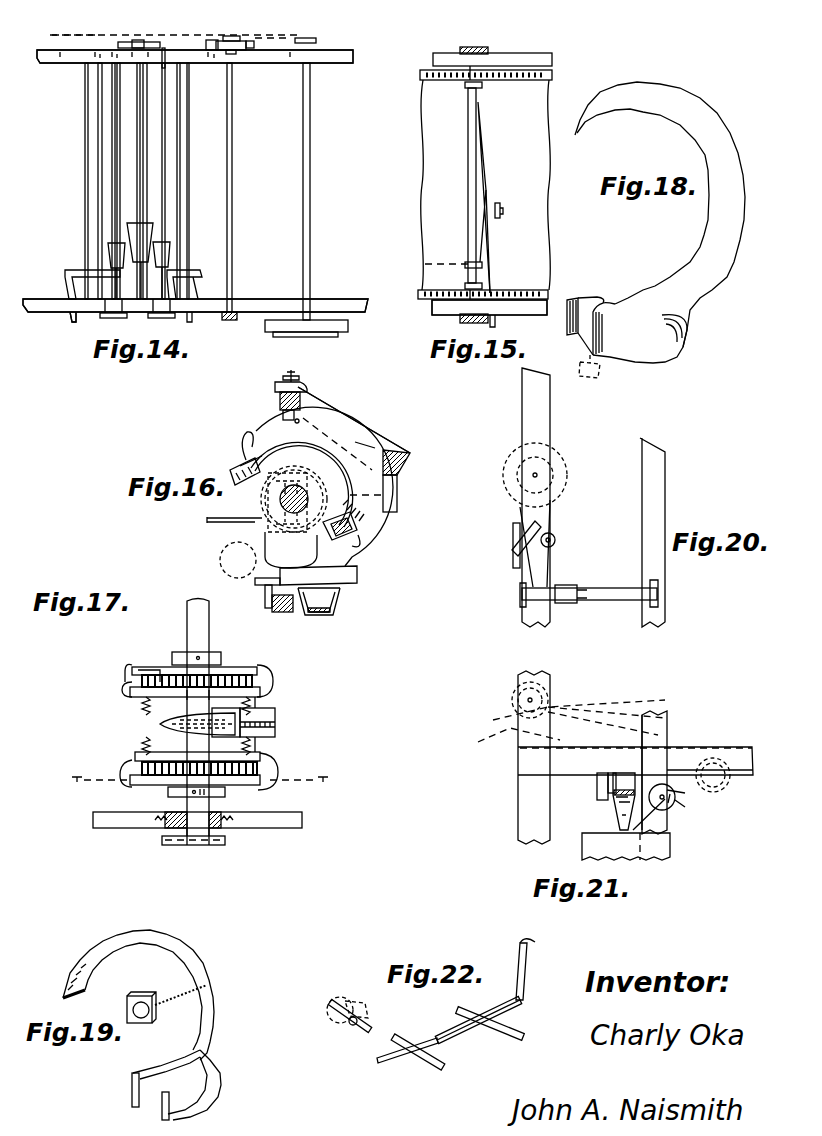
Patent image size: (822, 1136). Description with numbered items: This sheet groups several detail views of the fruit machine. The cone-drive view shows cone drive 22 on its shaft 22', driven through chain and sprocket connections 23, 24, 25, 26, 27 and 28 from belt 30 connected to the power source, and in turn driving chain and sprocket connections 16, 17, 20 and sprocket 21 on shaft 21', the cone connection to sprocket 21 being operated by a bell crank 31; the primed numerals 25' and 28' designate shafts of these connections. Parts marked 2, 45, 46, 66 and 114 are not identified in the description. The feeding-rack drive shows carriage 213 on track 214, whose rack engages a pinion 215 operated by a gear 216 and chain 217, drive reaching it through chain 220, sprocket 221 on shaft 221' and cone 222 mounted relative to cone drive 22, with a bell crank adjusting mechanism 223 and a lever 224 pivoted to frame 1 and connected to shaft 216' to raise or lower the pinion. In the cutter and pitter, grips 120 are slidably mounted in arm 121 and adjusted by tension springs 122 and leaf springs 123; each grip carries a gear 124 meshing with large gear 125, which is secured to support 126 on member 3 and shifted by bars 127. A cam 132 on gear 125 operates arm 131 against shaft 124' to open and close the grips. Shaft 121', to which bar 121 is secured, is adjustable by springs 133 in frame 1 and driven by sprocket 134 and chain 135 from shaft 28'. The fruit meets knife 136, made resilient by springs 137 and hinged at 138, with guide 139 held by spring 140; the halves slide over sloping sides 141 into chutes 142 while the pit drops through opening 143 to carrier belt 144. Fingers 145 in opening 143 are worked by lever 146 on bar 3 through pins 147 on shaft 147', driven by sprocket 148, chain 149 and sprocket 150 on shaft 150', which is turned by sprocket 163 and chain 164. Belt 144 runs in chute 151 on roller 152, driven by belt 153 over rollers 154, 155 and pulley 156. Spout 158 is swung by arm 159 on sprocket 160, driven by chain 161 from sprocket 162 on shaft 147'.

In FIG. 15, the frame 1 is at (458, 317).
In FIG. 16, the frame 1 is at (403, 493).
In FIG. 20, the frame 1 is at (528, 398).
In FIG. 21, the frame 1 is at (667, 730).
In FIG. 14, the base plate 2 is at (320, 63).
In FIG. 15, the base plate 2 is at (533, 307).
In FIG. 16, the base plate 2 is at (365, 443).
In FIG. 21, the base plate 2 is at (553, 766).
In FIG. 14, the bar 3 is at (185, 163).
In FIG. 16, the bar 3 is at (278, 402).
In FIG. 17, the chain and sprocket connection 16 is at (203, 790).
In FIG. 16, the chain and sprocket connection 17 is at (228, 442).
In FIG. 14, the chain and sprocket connection 20 is at (326, 334).
In FIG. 14, the sprocket 21 is at (81, 328).
In FIG. 14, the shaft 21' is at (86, 181).
In FIG. 14, the cone drive 22 is at (97, 259).
In FIG. 14, the shaft 22' is at (92, 181).
In FIG. 14, the chain and sprocket connection 23 is at (123, 42).
In FIG. 14, the chain and sprocket connection 24 is at (164, 46).
In FIG. 14, the chain and sprocket connection 25 is at (235, 31).
In FIG. 14, the shaft 25' is at (245, 181).
In FIG. 14, the chain and sprocket connection 26 is at (247, 42).
In FIG. 14, the chain and sprocket connection 27 is at (275, 38).
In FIG. 14, the chain and sprocket connection 28 is at (310, 31).
In FIG. 14, the shaft 28' is at (288, 191).
In FIG. 14, the belt 30 is at (284, 334).
In FIG. 14, the bell crank 31 is at (64, 272).
In FIG. 14, the cover 45 is at (80, 36).
In FIG. 14, the clip 46 is at (214, 40).
In FIG. 14, the nut 66 is at (232, 321).
In FIG. 14, the rod 114 is at (233, 306).
In FIG. 17, the grip 120 is at (147, 713).
In FIG. 17, the arm 121 is at (175, 730).
In FIG. 17, the shaft 121' is at (218, 722).
In FIG. 19, the shaft 121' is at (147, 1021).
In FIG. 17, the tension spring 122 is at (140, 701).
In FIG. 16, the adjustable leaf spring 123 is at (230, 462).
In FIG. 17, the adjustable leaf spring 123 is at (138, 672).
In FIG. 16, the gear 124 is at (292, 512).
In FIG. 17, the gear 124 is at (155, 657).
In FIG. 17, the shaft 124' is at (111, 670).
In FIG. 16, the large gear 125 is at (246, 516).
In FIG. 17, the large gear 125 is at (183, 691).
In FIG. 16, the support 126 is at (267, 536).
In FIG. 17, the support 126 is at (205, 656).
In FIG. 16, the bar 127 is at (205, 531).
In FIG. 16, the arm 131 is at (246, 455).
In FIG. 17, the arm 131 is at (178, 650).
In FIG. 17, the cam 132 is at (182, 645).
In FIG. 17, the spring 133 is at (159, 833).
In FIG. 17, the sprocket 134 is at (227, 847).
In FIG. 17, the chain 135 is at (193, 846).
In FIG. 18, the knife 136 is at (708, 143).
In FIG. 16, the knife 136 is at (327, 437).
In FIG. 17, the knife 136 is at (260, 748).
In FIG. 16, the spring 137 is at (298, 420).
In FIG. 16, the hinge 138 is at (368, 512).
In FIG. 17, the guide 139 is at (168, 728).
In FIG. 19, the guide 139 is at (195, 955).
In FIG. 16, the spring 140 is at (367, 440).
In FIG. 19, the spring 140 is at (180, 992).
In FIG. 18, the sloping side 141 is at (683, 313).
In FIG. 16, the chute 142 is at (357, 577).
In FIG. 17, the chute 142 is at (263, 733).
In FIG. 18, the opening 143 is at (610, 293).
In FIG. 16, the carrier belt 144 is at (327, 611).
In FIG. 20, the carrier belt 144 is at (562, 587).
In FIG. 21, the carrier belt 144 is at (610, 797).
In FIG. 18, the finger 145 is at (627, 308).
In FIG. 16, the finger 145 is at (238, 560).
In FIG. 22, the finger 145 is at (523, 979).
In FIG. 16, the lever 146 is at (255, 581).
In FIG. 22, the lever 146 is at (458, 1035).
In FIG. 22, the pin 147 is at (391, 1059).
In FIG. 21, the shaft 147' is at (713, 792).
In FIG. 22, the shaft 147' is at (457, 1041).
In FIG. 21, the sprocket 148 is at (708, 757).
In FIG. 22, the sprocket 148 is at (330, 1018).
In FIG. 21, the chain 149 is at (655, 712).
In FIG. 22, the chain 149 is at (340, 993).
In FIG. 21, the sprocket 150 is at (556, 690).
In FIG. 21, the shaft 150' is at (501, 697).
In FIG. 16, the chute 151 is at (325, 597).
In FIG. 20, the chute 151 is at (580, 588).
In FIG. 21, the chute 151 is at (598, 778).
In FIG. 20, the roller 152 is at (637, 588).
In FIG. 20, the belt 153 is at (557, 494).
In FIG. 20, the roller 154 is at (523, 537).
In FIG. 20, the roller 155 is at (555, 540).
In FIG. 20, the pulley 156 is at (517, 463).
In FIG. 21, the spout 158 is at (617, 818).
In FIG. 21, the arm 159 is at (647, 818).
In FIG. 21, the sprocket 160 is at (672, 807).
In FIG. 21, the chain 161 is at (685, 807).
In FIG. 22, the chain 161 is at (378, 1003).
In FIG. 21, the sprocket 162 is at (726, 772).
In FIG. 22, the sprocket 162 is at (353, 1034).
In FIG. 21, the sprocket 163 is at (517, 703).
In FIG. 21, the chain 164 is at (507, 735).
In FIG. 15, the carriage 213 is at (528, 184).
In FIG. 15, the track 214 is at (540, 78).
In FIG. 15, the pinion 215 is at (495, 81).
In FIG. 15, the gear 216 is at (497, 237).
In FIG. 15, the shaft 216' is at (454, 185).
In FIG. 15, the chain 217 is at (445, 257).
In FIG. 14, the chain 220 is at (125, 317).
In FIG. 14, the sprocket 221 is at (172, 319).
In FIG. 14, the shaft 221' is at (195, 181).
In FIG. 14, the cone 222 is at (173, 256).
In FIG. 14, the bell crank adjusting mechanism 223 is at (197, 280).
In FIG. 15, the lever 224 is at (492, 248).